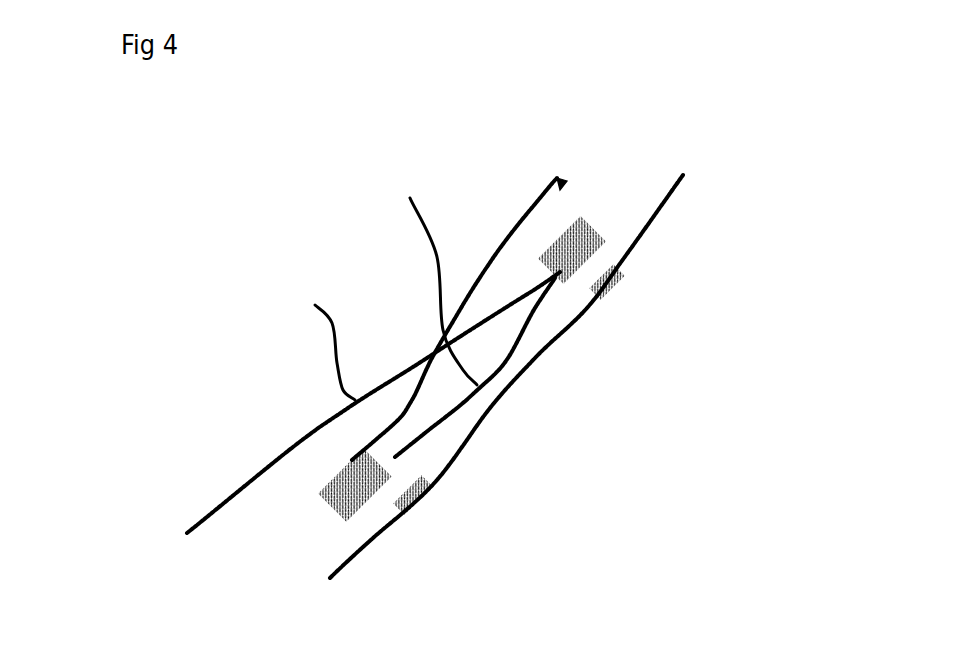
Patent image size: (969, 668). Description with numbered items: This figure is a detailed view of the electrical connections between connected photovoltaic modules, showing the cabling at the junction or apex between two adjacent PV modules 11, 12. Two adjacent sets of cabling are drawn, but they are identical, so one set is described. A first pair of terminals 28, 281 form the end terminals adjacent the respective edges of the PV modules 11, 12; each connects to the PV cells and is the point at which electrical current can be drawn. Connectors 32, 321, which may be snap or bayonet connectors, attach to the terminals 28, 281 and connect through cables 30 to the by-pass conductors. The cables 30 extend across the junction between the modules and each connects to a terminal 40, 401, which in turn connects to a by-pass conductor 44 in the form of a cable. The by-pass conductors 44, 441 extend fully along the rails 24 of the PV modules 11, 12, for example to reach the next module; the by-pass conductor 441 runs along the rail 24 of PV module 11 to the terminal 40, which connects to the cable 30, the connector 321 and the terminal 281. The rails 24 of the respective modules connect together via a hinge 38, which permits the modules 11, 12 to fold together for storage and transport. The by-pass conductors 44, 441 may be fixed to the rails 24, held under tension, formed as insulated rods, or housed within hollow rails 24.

The PV module 11 is at (293, 235).
The PV module 12 is at (147, 502).
The rail 24 is at (450, 217).
The terminal 28 is at (563, 237).
The terminal 281 is at (320, 488).
The cable 30 is at (388, 428).
The connector 32 is at (543, 260).
The connector 321 is at (360, 449).
The hinge 38 is at (453, 385).
The terminal 40 is at (497, 242).
The terminal 401 is at (297, 442).
The by-pass conductor 44 is at (210, 515).
The by-pass conductor 441 is at (560, 178).